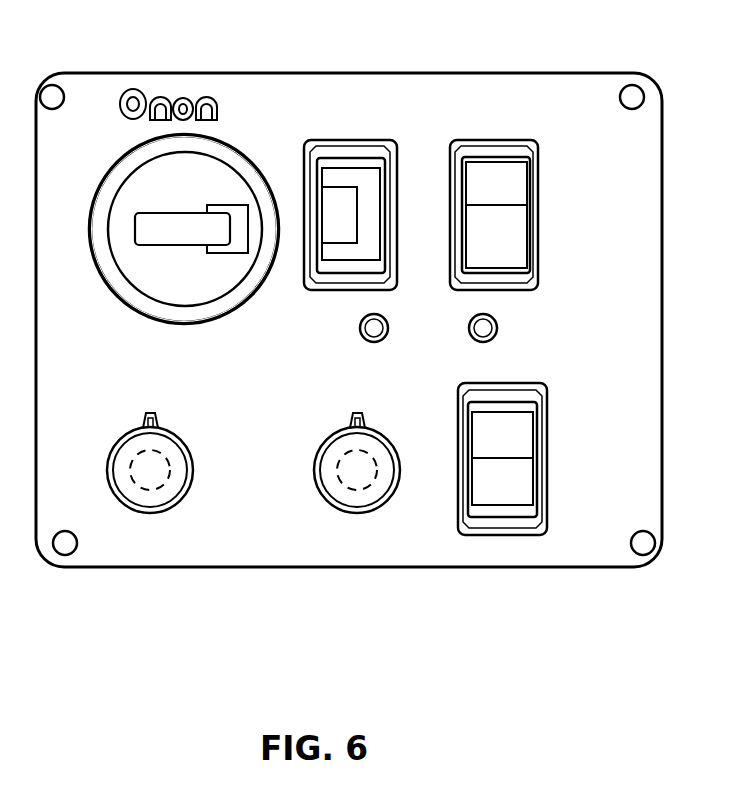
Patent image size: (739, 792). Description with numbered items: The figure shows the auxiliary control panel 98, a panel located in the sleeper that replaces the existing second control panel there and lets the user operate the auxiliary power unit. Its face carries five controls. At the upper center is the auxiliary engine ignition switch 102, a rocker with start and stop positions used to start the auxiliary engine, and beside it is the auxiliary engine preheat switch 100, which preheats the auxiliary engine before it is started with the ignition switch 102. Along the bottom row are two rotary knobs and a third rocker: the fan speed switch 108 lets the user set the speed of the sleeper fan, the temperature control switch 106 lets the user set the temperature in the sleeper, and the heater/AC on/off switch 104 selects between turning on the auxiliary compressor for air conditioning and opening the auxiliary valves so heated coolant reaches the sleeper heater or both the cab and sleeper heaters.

The auxiliary control panel 98 is at (355, 73).
The auxiliary engine preheat switch 100 is at (505, 243).
The auxiliary engine ignition switch 102 is at (366, 186).
The heater/AC on/off switch 104 is at (520, 450).
The temperature control switch 106 is at (337, 450).
The fan speed switch 108 is at (138, 448).